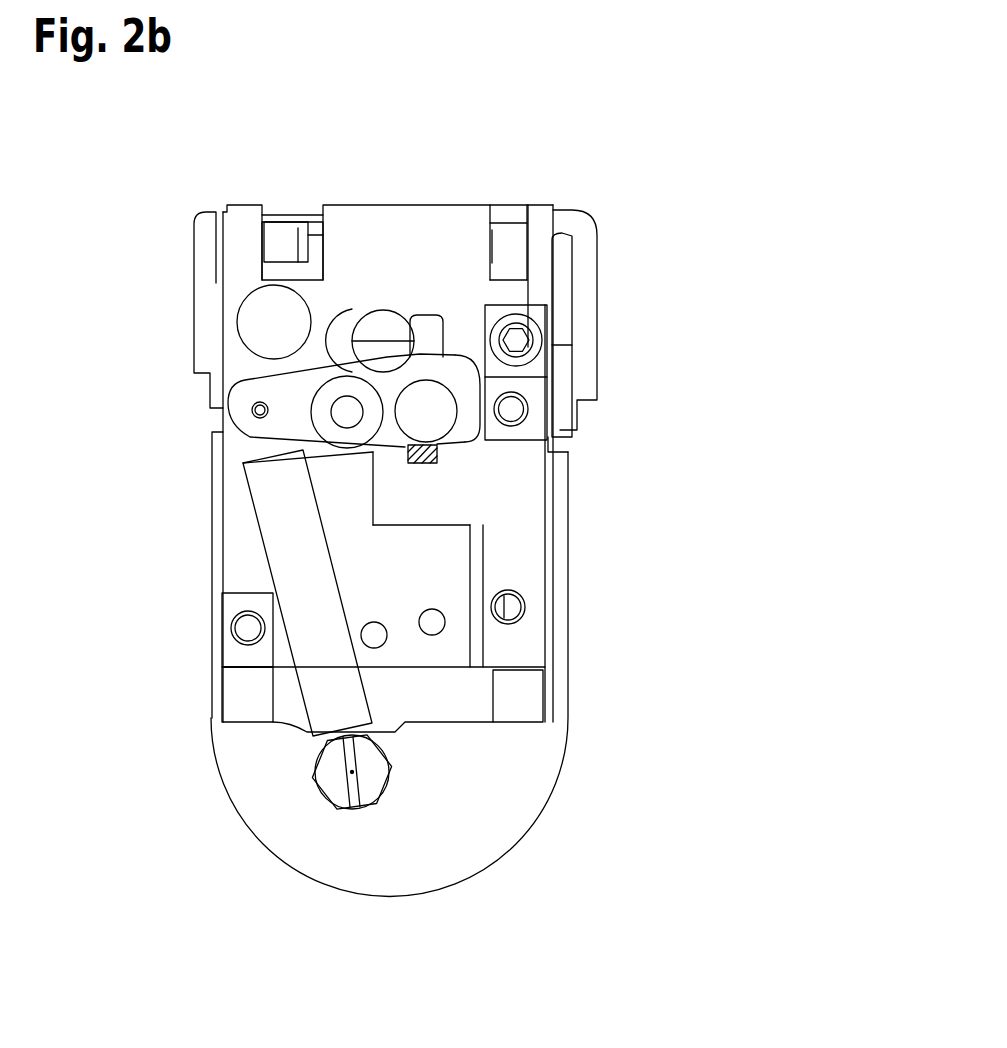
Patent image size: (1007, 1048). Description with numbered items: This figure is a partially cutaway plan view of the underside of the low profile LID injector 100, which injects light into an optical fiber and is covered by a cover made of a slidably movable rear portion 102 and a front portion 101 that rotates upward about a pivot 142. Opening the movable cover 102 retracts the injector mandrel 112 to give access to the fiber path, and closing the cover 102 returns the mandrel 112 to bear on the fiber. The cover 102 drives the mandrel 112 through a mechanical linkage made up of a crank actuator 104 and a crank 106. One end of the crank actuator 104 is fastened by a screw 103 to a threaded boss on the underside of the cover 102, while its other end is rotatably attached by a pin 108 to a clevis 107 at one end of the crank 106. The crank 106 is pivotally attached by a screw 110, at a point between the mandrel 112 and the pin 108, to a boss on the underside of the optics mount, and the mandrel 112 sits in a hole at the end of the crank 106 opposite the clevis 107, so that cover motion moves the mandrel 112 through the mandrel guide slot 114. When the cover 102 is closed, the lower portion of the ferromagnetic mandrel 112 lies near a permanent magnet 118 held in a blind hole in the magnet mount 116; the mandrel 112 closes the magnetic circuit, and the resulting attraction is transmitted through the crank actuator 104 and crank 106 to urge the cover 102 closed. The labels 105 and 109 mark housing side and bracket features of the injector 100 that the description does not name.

The low profile LID injector 100 is at (648, 667).
The front portion of the cover 101 is at (597, 258).
The rear portion of the cover 102 is at (557, 748).
The screw 103 is at (385, 798).
The crank actuator 104 is at (317, 642).
The housing side wall 105 is at (217, 443).
The crank 106 is at (468, 412).
The clevis 107 is at (243, 402).
The pin 108 is at (258, 412).
The bracket 109 is at (216, 359).
The screw 110 is at (347, 408).
The injector mandrel 112 is at (435, 400).
The mandrel guide slot 114 is at (375, 327).
The magnet mount 116 is at (522, 513).
The permanent magnet 118 is at (437, 455).
The pivot 142 is at (276, 242).